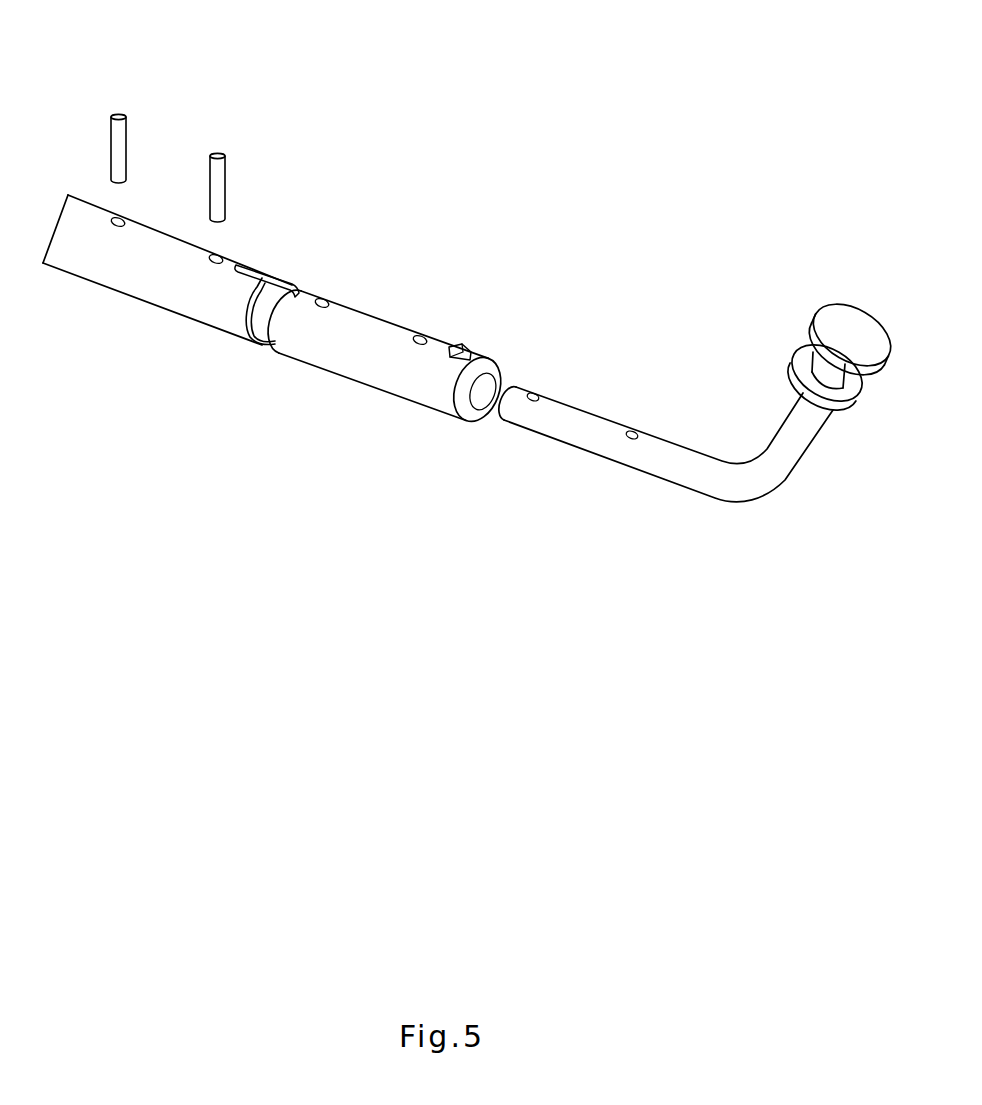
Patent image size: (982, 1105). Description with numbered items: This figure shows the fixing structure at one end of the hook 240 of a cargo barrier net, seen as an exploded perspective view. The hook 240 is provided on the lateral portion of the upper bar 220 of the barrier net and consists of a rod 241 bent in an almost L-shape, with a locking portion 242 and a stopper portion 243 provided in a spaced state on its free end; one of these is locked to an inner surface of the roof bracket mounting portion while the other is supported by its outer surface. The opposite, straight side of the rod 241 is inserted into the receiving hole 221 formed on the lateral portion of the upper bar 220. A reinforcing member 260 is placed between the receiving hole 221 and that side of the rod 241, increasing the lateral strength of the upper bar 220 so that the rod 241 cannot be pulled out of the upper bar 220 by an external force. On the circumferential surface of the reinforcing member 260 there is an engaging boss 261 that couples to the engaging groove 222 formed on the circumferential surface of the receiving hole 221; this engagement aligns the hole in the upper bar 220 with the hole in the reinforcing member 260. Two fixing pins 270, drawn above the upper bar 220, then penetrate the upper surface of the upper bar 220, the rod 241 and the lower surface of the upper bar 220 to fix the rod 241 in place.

The upper bar 220 is at (132, 280).
The receiving hole 221 is at (257, 348).
The engaging groove 222 is at (262, 268).
The reinforcing member 260 is at (382, 340).
The engaging boss 261 is at (465, 350).
The fixing pin 270 is at (218, 153).
The hook 240 is at (699, 467).
The rod 241 is at (623, 450).
The locking portion 242 is at (877, 350).
The stopper portion 243 is at (820, 397).